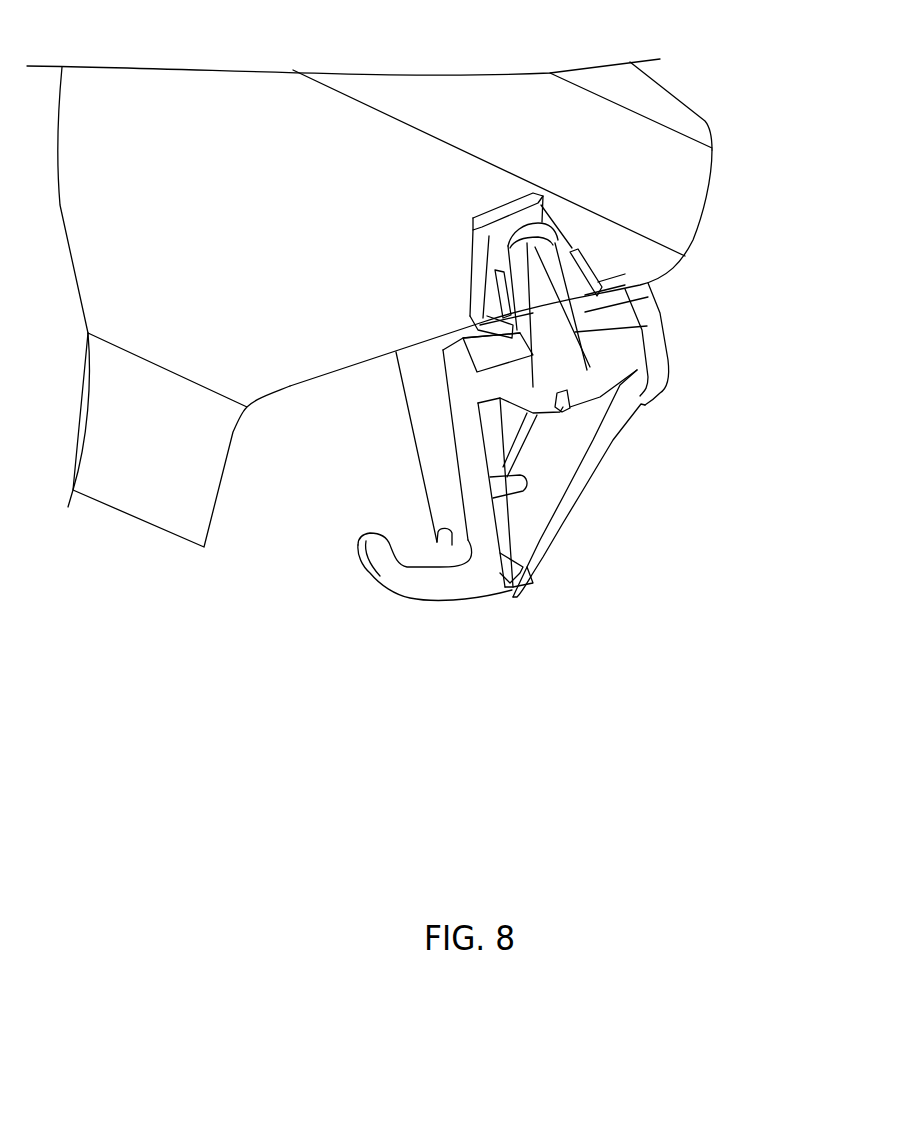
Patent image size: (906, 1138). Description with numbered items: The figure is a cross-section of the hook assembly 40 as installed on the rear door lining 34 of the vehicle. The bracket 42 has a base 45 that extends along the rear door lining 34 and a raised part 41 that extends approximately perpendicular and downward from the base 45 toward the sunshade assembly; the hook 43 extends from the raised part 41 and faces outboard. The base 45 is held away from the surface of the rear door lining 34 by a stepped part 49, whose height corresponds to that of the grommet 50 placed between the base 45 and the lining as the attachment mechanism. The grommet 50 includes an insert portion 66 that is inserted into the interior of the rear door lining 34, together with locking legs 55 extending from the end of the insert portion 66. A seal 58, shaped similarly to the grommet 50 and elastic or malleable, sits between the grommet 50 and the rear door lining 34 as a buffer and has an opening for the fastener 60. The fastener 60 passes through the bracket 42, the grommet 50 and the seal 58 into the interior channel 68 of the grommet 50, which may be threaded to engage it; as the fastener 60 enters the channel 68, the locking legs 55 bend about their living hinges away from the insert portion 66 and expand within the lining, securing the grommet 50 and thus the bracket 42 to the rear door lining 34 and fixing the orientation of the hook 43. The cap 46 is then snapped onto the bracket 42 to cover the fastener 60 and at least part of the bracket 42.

The rear door lining 34 is at (290, 390).
The hook assembly 40 is at (589, 580).
The raised part 41 is at (437, 413).
The bracket 42 is at (420, 528).
The hook 43 is at (390, 540).
The base 45 is at (651, 343).
The cap 46 is at (592, 478).
The stepped part 49 is at (470, 363).
The grommet 50 is at (660, 321).
The locking legs 55 is at (487, 285).
The seal 58 is at (687, 272).
The fastener 60 is at (603, 388).
The insert portion 66 is at (495, 208).
The channel 68 is at (538, 220).